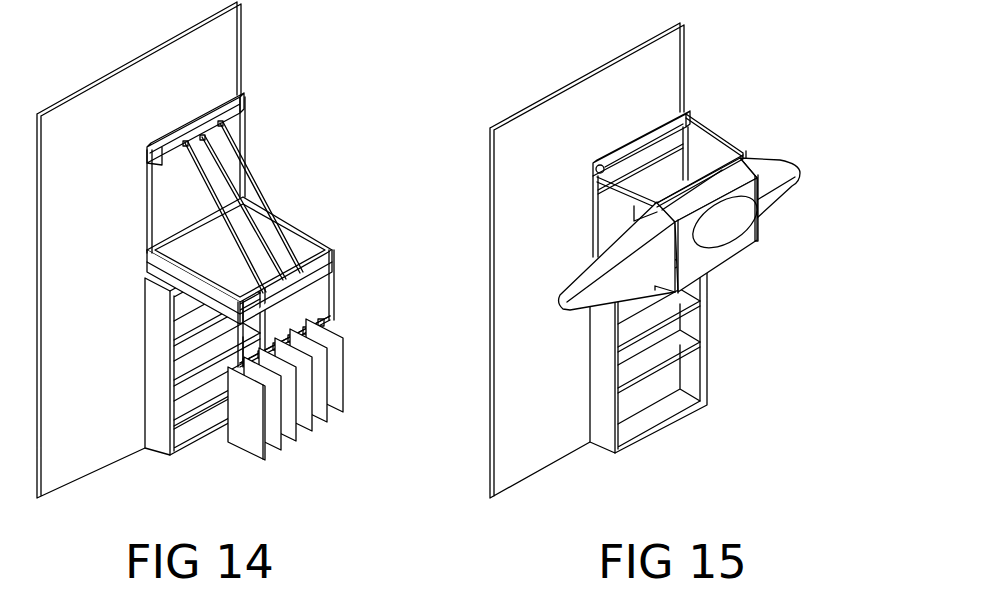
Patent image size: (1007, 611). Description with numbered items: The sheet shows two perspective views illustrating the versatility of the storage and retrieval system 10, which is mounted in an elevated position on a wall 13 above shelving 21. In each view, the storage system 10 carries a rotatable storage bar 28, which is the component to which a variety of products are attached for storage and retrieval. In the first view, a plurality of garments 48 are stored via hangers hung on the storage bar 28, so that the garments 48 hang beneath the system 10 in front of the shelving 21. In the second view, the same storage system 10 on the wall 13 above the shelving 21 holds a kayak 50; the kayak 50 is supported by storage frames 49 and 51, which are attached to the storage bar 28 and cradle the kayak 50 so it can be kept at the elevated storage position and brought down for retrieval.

In FIG. 14, the storage and retrieval system 10 is at (278, 163).
In FIG. 15, the storage and retrieval system 10 is at (631, 118).
In FIG. 14, the wall 13 is at (110, 153).
In FIG. 15, the wall 13 is at (560, 190).
In FIG. 14, the shelving 21 is at (157, 368).
In FIG. 15, the shelving 21 is at (602, 382).
In FIG. 14, the rotatable storage bar 28 is at (330, 319).
In FIG. 15, the rotatable storage bar 28 is at (722, 160).
In FIG. 14, the garments 48 is at (357, 358).
In FIG. 15, the storage frame 49 is at (654, 293).
In FIG. 15, the kayak 50 is at (809, 164).
In FIG. 15, the storage frame 51 is at (771, 243).